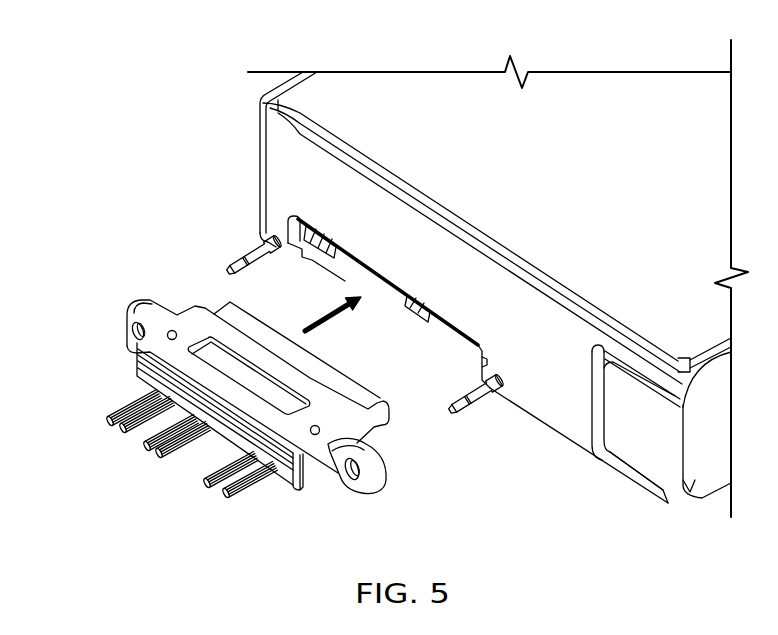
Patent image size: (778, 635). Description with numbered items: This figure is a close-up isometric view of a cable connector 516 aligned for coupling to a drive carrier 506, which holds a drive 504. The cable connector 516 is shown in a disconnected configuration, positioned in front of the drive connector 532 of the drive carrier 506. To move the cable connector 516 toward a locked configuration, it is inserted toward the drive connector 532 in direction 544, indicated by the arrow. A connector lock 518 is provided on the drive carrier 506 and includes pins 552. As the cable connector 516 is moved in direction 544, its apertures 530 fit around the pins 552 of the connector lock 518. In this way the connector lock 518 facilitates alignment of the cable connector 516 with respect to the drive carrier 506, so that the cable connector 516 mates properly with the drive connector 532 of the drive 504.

The drive 504 is at (465, 268).
The drive carrier 506 is at (258, 140).
The cable connector 516 is at (236, 390).
The connector lock 518 is at (331, 306).
The apertures 530 is at (365, 473).
The drive connector 532 is at (362, 268).
The direction 544 is at (328, 323).
The pins 552 is at (242, 254).